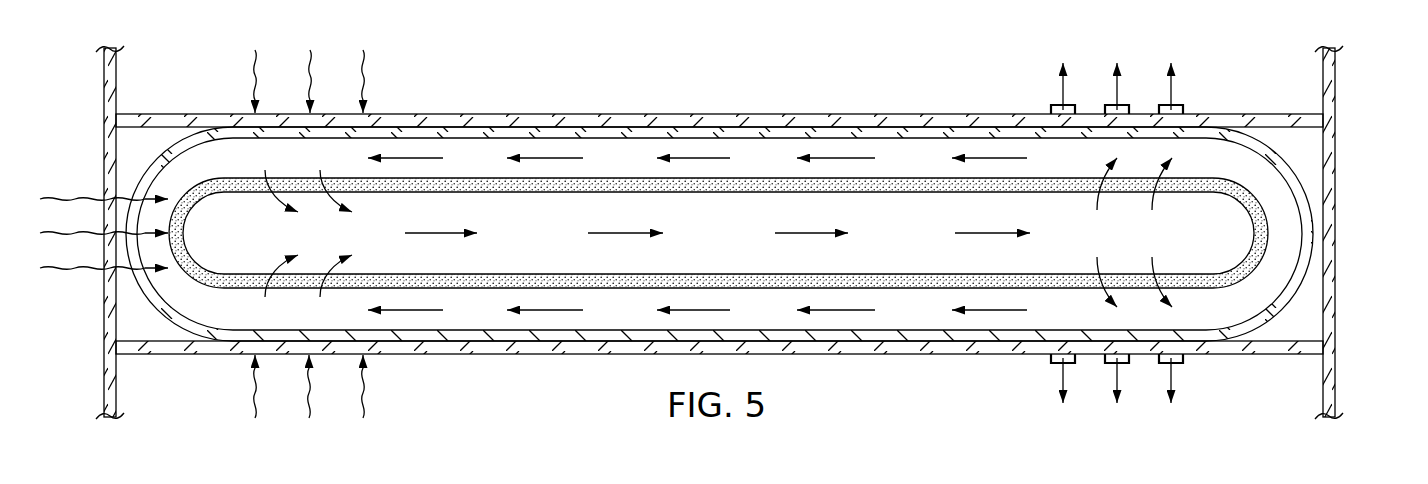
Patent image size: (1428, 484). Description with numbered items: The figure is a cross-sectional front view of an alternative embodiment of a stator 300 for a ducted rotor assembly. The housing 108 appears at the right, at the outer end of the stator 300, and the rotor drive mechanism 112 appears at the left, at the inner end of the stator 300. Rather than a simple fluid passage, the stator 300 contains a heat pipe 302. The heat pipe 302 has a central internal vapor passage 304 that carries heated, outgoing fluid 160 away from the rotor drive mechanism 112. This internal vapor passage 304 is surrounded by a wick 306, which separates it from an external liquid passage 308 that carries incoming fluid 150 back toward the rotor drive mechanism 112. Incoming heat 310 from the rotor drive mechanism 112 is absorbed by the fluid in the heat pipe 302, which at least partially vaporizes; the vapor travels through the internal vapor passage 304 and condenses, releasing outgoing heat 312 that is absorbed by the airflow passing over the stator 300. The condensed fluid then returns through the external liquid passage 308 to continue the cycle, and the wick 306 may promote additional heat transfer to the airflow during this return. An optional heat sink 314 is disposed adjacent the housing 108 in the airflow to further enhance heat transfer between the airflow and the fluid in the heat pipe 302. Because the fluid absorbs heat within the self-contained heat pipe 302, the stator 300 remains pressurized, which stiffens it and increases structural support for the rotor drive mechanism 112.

The rotor drive mechanism 112 is at (108, 93).
The housing 108 is at (1335, 95).
The incoming heat 310 is at (255, 72).
The stator 300 is at (522, 112).
The heat pipe 302 is at (798, 130).
The wick 306 is at (600, 185).
The internal vapor passage 304 is at (557, 247).
The external liquid passage 308 is at (932, 157).
The heat sink 314 is at (1051, 108).
The outgoing heat 312 is at (1172, 95).
The outgoing fluid 160 is at (795, 233).
The incoming fluid 150 is at (850, 310).